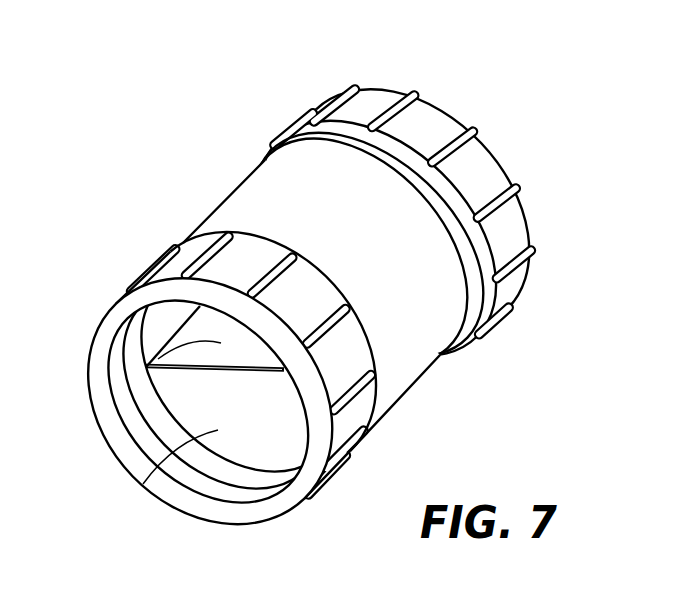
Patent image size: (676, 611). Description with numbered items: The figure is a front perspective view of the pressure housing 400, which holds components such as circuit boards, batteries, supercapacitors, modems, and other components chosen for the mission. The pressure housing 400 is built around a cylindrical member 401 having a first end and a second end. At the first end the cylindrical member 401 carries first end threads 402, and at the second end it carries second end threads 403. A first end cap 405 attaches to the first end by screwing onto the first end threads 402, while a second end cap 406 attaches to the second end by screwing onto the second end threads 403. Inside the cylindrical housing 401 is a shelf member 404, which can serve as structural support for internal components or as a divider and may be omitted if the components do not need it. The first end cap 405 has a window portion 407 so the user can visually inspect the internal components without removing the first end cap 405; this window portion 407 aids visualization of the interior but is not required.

The pressure housing 400 is at (158, 105).
The cylindrical member 401 is at (287, 213).
The first end threads 402 is at (365, 337).
The second end threads 403 is at (469, 258).
The shelf member 404 is at (146, 370).
The first end cap 405 is at (107, 327).
The second end cap 406 is at (345, 86).
The window portion 407 is at (143, 484).